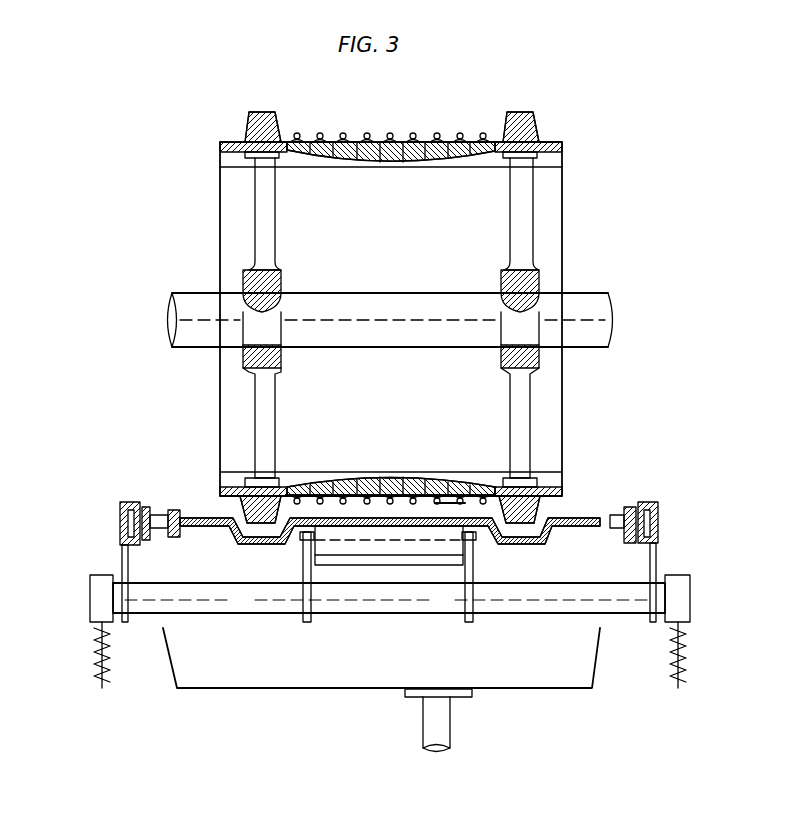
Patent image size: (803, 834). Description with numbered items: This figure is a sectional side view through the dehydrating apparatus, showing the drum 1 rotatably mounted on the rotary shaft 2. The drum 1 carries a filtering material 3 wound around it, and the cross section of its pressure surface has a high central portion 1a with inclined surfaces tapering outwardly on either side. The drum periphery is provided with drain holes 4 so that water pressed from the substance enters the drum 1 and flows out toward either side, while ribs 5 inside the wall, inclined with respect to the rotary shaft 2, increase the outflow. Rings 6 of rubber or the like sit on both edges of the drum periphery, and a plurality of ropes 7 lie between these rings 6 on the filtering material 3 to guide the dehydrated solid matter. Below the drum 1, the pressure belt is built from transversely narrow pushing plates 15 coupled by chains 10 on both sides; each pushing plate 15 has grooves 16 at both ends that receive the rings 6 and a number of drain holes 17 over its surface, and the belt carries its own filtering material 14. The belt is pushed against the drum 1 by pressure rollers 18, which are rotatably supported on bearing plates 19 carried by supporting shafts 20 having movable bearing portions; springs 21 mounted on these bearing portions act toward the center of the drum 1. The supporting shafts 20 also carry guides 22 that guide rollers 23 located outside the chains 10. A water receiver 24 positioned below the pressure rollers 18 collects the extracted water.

The drum 1 is at (220, 233).
The high central portion 1a is at (394, 478).
The rotary shaft 2 is at (578, 295).
The filtering material 3 is at (401, 138).
The drain holes 4 is at (372, 150).
The ribs 5 is at (562, 164).
The rings 6 is at (262, 112).
The ropes 7 is at (345, 134).
The chains 10 is at (163, 515).
The filtering material 14 is at (225, 518).
The pushing plates 15 is at (355, 532).
The grooves 16 is at (248, 544).
The drain holes 17 is at (447, 503).
The pressure rollers 18 is at (398, 548).
The bearing plates 19 is at (305, 590).
The supporting shafts 20 is at (532, 600).
The springs 21 is at (94, 650).
The guides 22 is at (124, 505).
The guide rollers 23 is at (120, 522).
The water receiver 24 is at (290, 689).